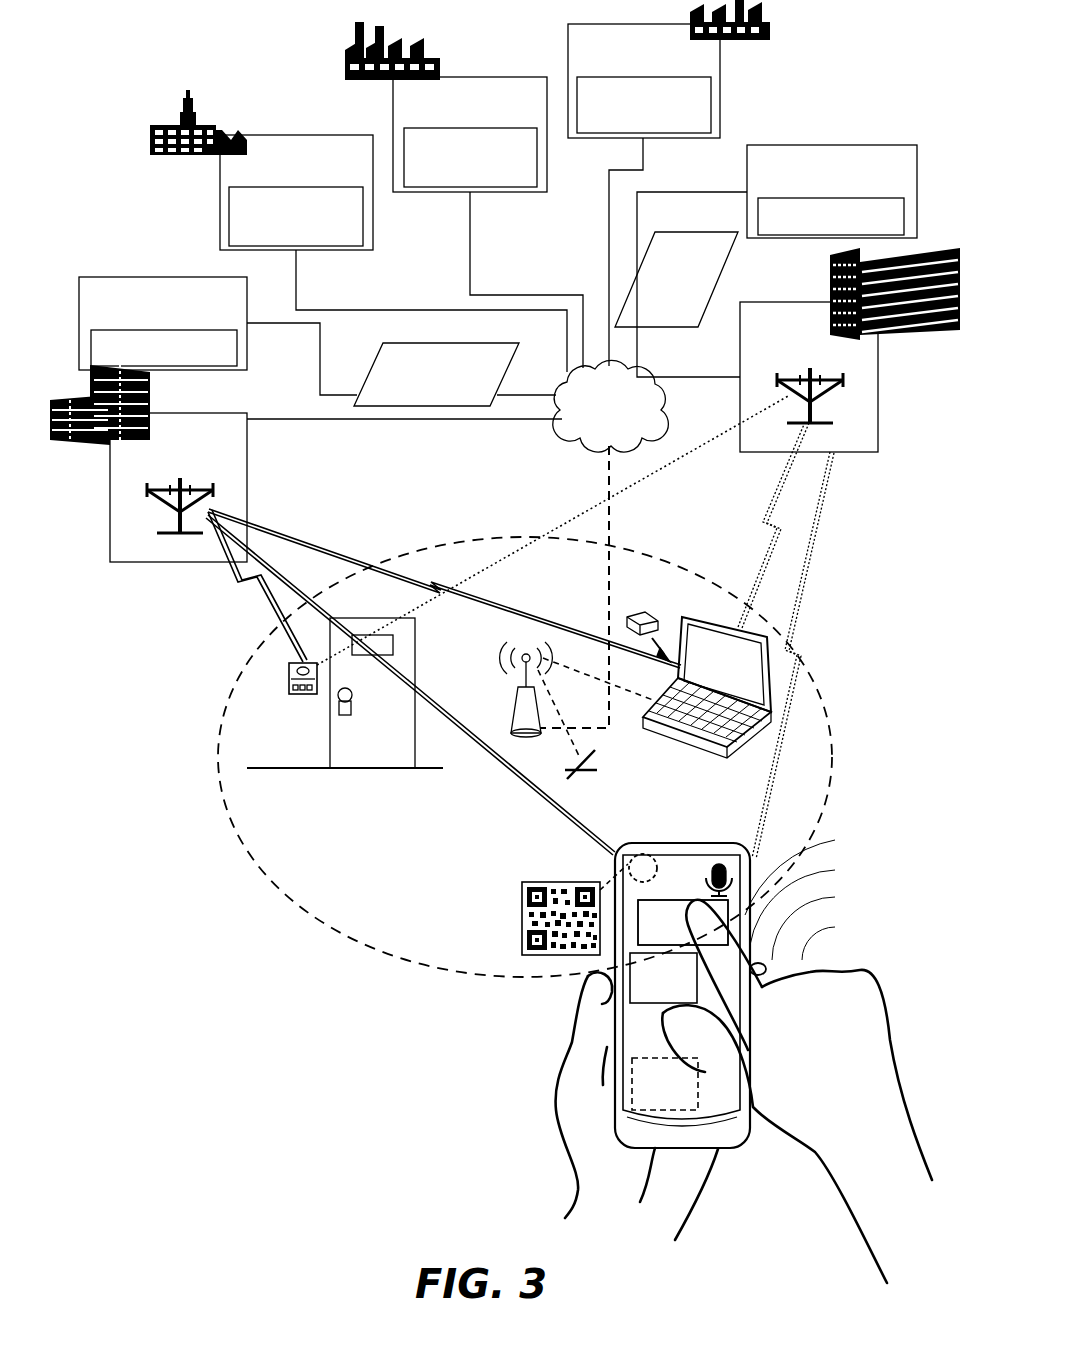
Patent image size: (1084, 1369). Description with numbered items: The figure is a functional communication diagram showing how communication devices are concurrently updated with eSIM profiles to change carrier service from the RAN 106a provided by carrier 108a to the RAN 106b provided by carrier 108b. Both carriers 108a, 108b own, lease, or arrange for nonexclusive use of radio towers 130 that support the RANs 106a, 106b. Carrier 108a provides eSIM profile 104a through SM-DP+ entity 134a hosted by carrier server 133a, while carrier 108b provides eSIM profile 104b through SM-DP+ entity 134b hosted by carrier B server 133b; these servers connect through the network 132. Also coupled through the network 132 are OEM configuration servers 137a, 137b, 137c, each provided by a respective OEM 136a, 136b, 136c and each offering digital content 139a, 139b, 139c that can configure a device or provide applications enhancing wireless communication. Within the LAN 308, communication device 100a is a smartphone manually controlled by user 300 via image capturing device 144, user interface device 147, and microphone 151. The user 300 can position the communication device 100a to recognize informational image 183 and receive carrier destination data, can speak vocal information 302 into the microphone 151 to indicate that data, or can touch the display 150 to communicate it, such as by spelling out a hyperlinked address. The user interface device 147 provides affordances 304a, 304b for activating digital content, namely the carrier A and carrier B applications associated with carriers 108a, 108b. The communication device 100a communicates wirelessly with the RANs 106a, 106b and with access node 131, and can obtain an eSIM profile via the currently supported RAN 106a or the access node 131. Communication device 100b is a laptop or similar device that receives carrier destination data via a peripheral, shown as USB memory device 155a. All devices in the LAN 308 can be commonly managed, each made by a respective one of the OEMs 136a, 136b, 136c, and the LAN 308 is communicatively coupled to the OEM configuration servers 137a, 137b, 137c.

The communication device 100a is at (288, 679).
The communication device 100b is at (757, 637).
The eSIM profile 104a is at (416, 394).
The eSIM profile 104b is at (654, 312).
The RAN 106a is at (157, 465).
The RAN 106b is at (788, 355).
The carrier 108a is at (145, 403).
The carrier 108b is at (832, 256).
The radio tower 130 is at (213, 490).
The access node 131 is at (512, 714).
The network 132 is at (594, 424).
The carrier server 133a is at (142, 326).
The carrier B server 133b is at (811, 194).
The SM-DP+ entity 134a is at (224, 360).
The SM-DP+ entity 134b is at (893, 228).
The OEM 136a is at (190, 97).
The OEM 136b is at (415, 50).
The OEM 136c is at (770, 22).
The OEM configuration server 137a is at (276, 184).
The OEM configuration server 137b is at (450, 126).
The OEM configuration server 137c is at (624, 73).
The digital content 139a is at (356, 235).
The digital content 139b is at (530, 177).
The digital content 139c is at (704, 124).
The image capturing device 144 is at (586, 780).
The user interface device 147 is at (680, 878).
The display 150 is at (640, 946).
The microphone 151 is at (719, 865).
The USB memory device 155a is at (650, 620).
The informational image 183 is at (522, 916).
The user 300 is at (870, 1002).
The vocal information 302 is at (868, 902).
The affordance 304a is at (648, 1003).
The affordance 304b is at (640, 1110).
The LAN 308 is at (323, 884).